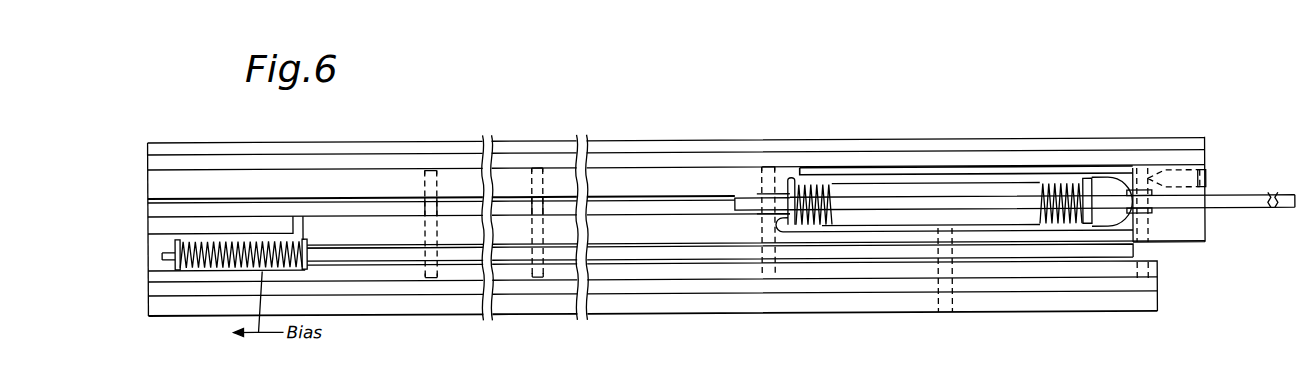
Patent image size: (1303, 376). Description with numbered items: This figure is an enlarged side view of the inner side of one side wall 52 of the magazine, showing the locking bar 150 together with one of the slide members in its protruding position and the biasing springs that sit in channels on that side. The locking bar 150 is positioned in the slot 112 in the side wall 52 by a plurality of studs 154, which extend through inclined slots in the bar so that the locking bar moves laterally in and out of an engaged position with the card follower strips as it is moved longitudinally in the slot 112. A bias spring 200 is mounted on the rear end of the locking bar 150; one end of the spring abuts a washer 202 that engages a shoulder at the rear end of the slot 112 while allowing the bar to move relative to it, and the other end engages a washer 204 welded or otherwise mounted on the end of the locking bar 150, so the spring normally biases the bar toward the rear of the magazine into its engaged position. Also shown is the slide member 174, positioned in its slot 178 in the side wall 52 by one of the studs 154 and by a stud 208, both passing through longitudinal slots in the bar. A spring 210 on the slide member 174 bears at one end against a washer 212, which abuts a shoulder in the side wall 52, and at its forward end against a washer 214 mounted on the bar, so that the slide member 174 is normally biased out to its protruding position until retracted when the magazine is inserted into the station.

The side wall 52 is at (702, 309).
The slot 112 is at (620, 248).
The locking bar 150 is at (678, 250).
The stud 154 is at (429, 192).
The slide member 174 is at (1222, 201).
The slot 178 is at (1183, 214).
The bias spring 200 is at (232, 241).
The washer 202 is at (301, 273).
The washer 204 is at (180, 272).
The stud 208 is at (1150, 183).
The spring 210 is at (832, 190).
The washer 212 is at (793, 180).
The washer 214 is at (1093, 184).